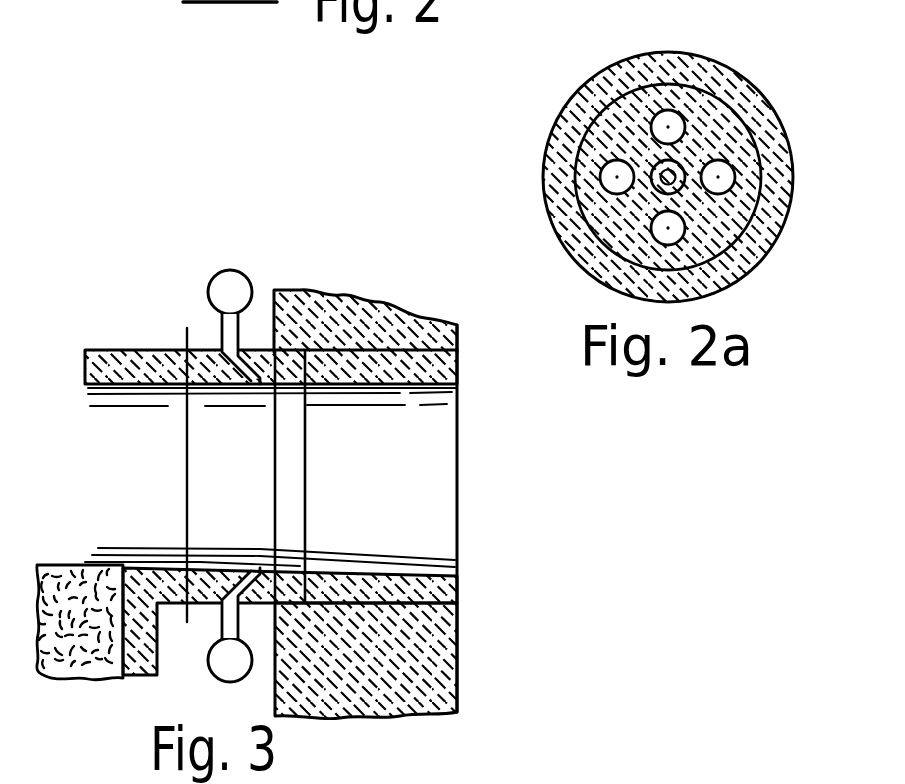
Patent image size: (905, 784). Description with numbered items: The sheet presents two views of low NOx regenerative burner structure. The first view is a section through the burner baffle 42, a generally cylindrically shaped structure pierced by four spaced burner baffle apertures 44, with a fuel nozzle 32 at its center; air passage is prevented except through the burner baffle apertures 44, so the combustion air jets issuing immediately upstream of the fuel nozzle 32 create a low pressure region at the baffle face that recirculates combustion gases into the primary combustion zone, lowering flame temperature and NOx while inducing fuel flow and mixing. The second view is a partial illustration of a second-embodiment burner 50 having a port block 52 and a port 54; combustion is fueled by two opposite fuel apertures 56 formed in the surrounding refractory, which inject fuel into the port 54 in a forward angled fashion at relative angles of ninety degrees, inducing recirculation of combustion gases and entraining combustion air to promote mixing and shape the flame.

In FIG. 2A, the fuel nozzle 32 is at (675, 184).
In FIG. 2A, the burner baffle 42 is at (727, 106).
In FIG. 2A, the burner baffle apertures 44 is at (668, 110).
In FIG. 3, the burner 50 is at (150, 344).
In FIG. 3, the port block 52 is at (442, 593).
In FIG. 3, the port 54 is at (438, 527).
In FIG. 3, the fuel apertures 56 is at (260, 384).